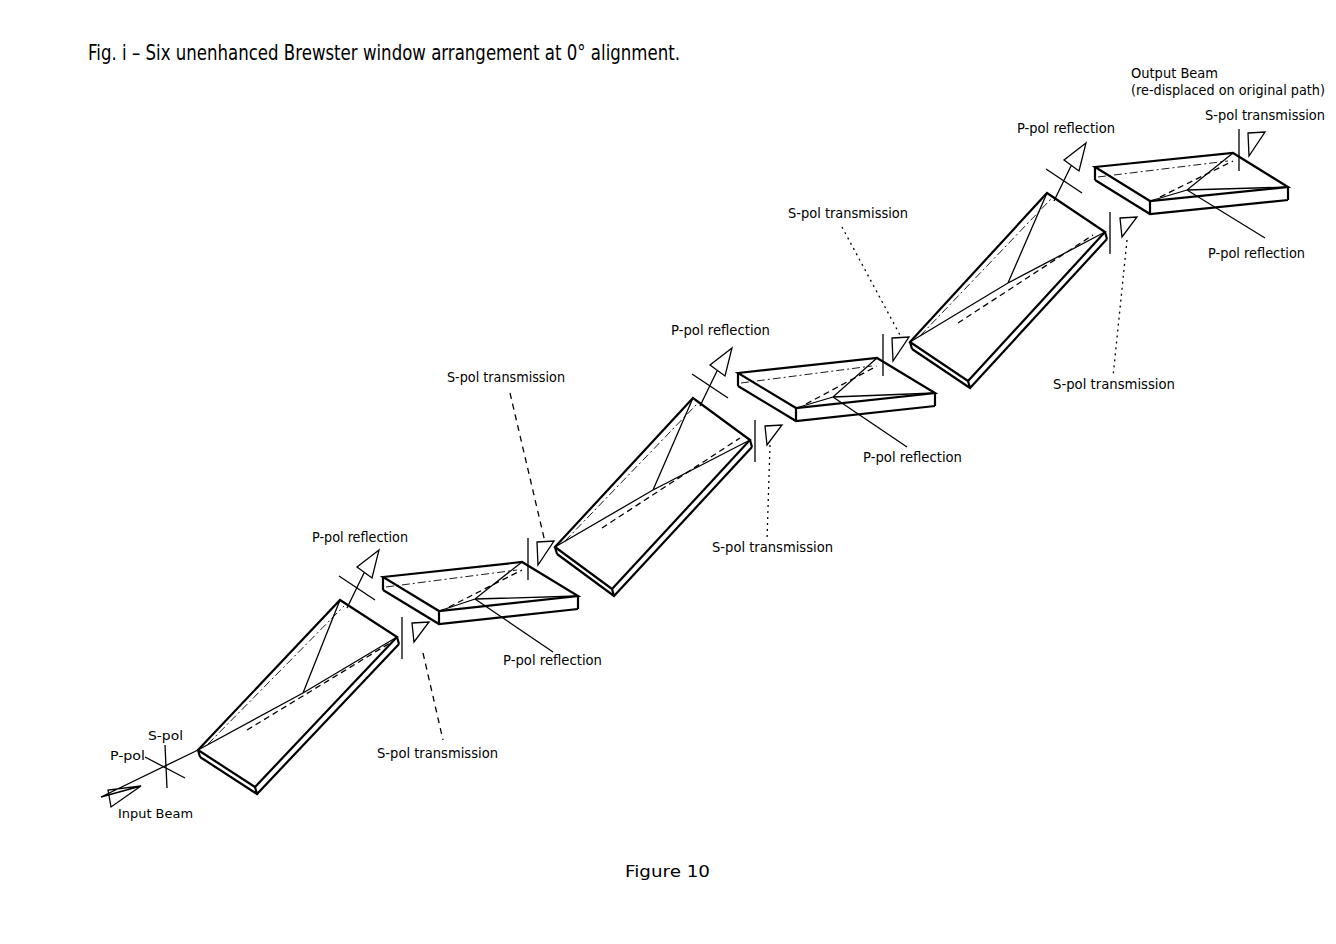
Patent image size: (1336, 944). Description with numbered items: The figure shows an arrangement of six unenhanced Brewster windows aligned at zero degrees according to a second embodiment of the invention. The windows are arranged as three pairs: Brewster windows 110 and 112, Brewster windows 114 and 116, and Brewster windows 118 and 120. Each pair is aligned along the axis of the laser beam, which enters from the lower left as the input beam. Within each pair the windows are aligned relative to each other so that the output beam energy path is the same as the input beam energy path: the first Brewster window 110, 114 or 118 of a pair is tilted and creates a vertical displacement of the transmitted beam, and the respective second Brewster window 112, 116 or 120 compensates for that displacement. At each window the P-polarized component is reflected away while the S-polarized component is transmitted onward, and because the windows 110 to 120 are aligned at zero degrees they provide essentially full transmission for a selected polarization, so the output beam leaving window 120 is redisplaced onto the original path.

The Brewster window 110 is at (334, 707).
The Brewster window 112 is at (472, 607).
The Brewster window 114 is at (692, 503).
The Brewster window 116 is at (825, 405).
The Brewster window 118 is at (1013, 328).
The Brewster window 120 is at (1170, 198).